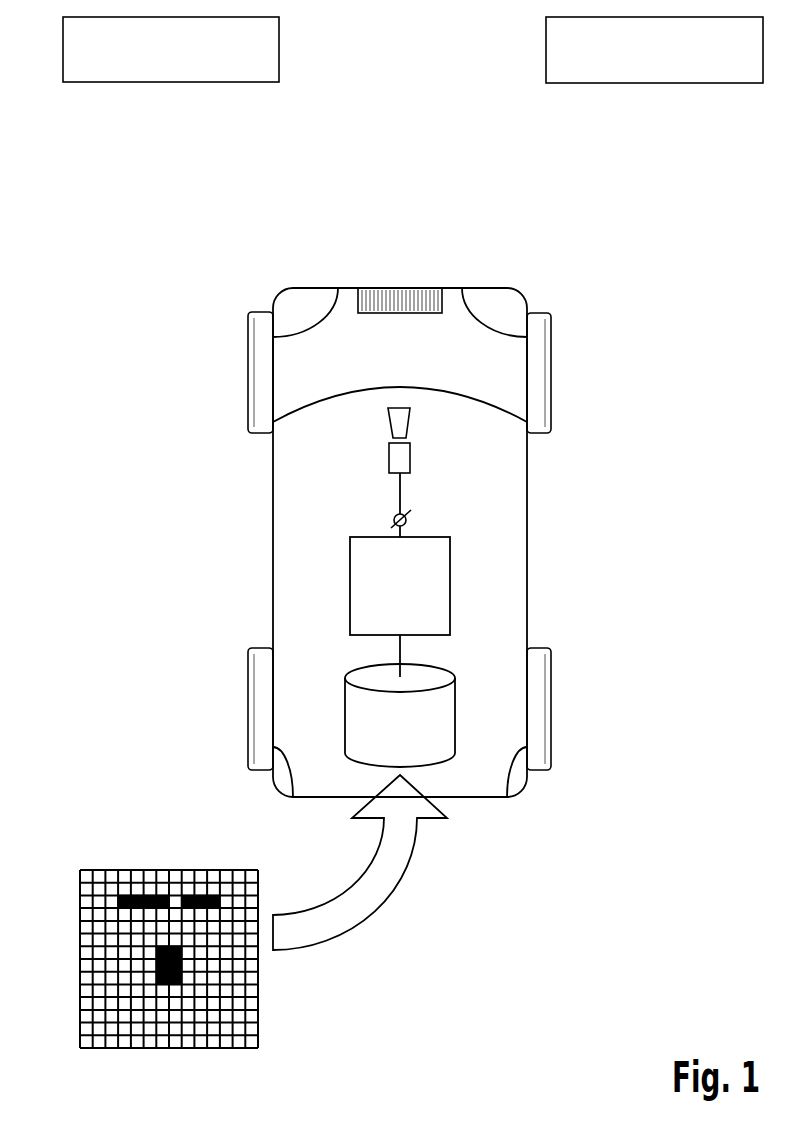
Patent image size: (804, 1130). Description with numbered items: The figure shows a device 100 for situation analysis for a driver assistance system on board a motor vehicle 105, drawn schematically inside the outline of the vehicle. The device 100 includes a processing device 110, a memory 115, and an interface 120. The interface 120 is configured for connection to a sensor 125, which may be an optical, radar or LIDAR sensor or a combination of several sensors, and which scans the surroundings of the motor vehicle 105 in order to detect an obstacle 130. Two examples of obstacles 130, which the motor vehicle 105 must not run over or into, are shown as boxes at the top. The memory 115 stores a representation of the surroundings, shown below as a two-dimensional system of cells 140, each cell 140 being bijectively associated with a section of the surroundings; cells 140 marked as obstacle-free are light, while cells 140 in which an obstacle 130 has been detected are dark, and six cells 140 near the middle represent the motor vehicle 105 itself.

The device 100 is at (310, 642).
The motor vehicle 105 is at (512, 297).
The processing device 110 is at (450, 591).
The memory 115 is at (347, 692).
The interface 120 is at (395, 516).
The sensor 125 is at (409, 459).
The obstacle 130 is at (174, 72).
The cell 140 is at (160, 870).